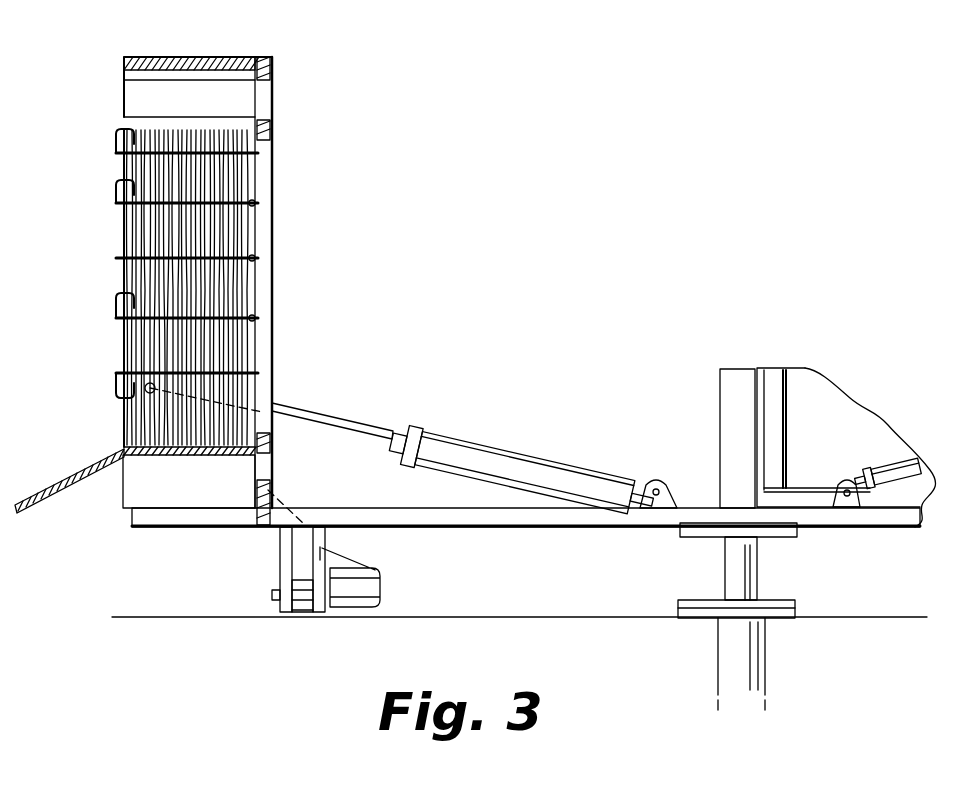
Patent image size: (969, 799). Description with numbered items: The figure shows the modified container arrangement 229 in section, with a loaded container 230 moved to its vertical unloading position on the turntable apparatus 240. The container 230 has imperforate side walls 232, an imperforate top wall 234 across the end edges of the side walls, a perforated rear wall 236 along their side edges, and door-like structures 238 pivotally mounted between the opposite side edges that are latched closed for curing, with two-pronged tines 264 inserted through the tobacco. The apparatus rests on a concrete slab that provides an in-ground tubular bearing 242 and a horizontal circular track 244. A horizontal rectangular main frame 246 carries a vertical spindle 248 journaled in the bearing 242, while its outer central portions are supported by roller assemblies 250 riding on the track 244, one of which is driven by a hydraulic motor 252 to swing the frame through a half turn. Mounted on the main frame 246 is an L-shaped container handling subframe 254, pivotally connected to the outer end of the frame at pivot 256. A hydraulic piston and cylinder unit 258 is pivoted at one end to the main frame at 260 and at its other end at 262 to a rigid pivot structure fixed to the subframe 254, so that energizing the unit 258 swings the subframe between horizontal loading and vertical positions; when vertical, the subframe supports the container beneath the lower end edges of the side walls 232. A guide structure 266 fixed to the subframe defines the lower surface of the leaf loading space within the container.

The modified container arrangement 229 is at (806, 268).
The container 230 is at (152, 52).
The side walls 232 is at (140, 100).
The top wall 234 is at (240, 40).
The perforated rear wall 236 is at (257, 228).
The door-like structures 238 is at (114, 156).
The turntable apparatus 240 is at (715, 360).
The in-ground tubular bearing 242 is at (768, 657).
The horizontal circular track 244 is at (280, 613).
The main frame 246 is at (542, 514).
The vertical spindle 248 is at (741, 585).
The wheel or roller assemblies 250 is at (310, 565).
The hydraulic motor 252 is at (372, 588).
The container handling subframe 254 is at (263, 292).
The pivot 256 is at (272, 492).
The hydraulic piston and cylinder units 258 is at (492, 440).
The pivot to main frame 260 is at (656, 485).
The pivot to subframe 262 is at (120, 420).
The two-pronged tines 264 is at (160, 246).
The guide structure 266 is at (52, 496).